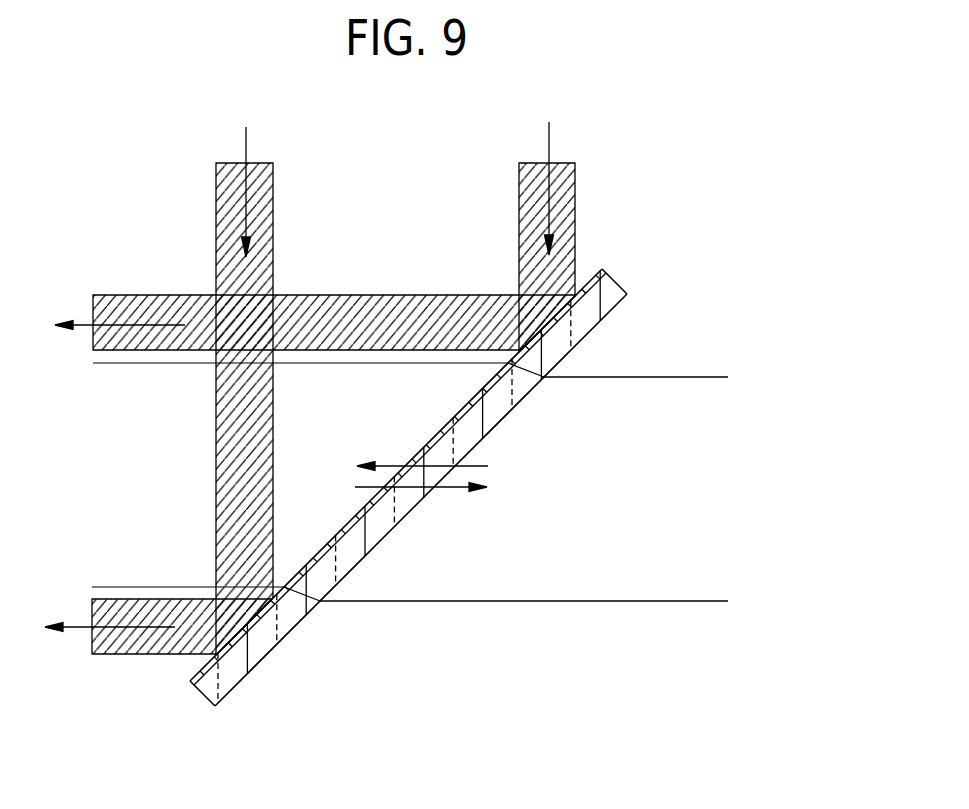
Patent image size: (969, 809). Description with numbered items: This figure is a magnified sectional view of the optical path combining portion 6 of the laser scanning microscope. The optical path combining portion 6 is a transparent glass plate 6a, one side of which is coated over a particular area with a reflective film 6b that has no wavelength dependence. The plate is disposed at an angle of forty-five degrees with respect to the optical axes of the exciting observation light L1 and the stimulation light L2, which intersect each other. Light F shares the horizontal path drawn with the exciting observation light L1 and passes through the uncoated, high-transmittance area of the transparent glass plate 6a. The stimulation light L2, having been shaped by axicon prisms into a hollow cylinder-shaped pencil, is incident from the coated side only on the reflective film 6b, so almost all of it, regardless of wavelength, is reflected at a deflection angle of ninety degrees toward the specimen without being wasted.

The optical path combining portion 6 is at (398, 435).
The transparent glass plate 6a is at (617, 274).
The reflective film 6b is at (361, 465).
The exciting observation light L1 is at (400, 462).
The stimulation light L2 is at (137, 293).
The fluorescence F is at (453, 492).